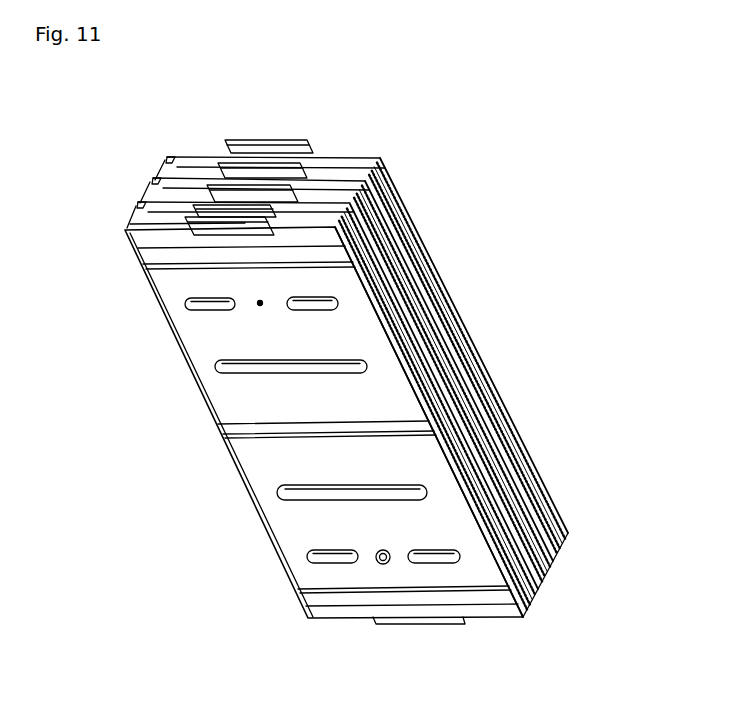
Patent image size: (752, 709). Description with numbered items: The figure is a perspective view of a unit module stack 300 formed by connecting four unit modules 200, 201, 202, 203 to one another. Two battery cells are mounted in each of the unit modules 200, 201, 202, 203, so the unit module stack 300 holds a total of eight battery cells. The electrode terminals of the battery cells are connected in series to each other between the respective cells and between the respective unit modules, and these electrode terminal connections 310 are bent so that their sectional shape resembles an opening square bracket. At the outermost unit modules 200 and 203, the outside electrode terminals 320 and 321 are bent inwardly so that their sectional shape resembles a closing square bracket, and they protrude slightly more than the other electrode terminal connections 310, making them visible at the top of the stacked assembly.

The unit module stack 300 is at (76, 65).
The unit module 200 is at (262, 478).
The unit module 201 is at (530, 583).
The unit module 202 is at (553, 550).
The unit module 203 is at (570, 530).
The electrode terminal connection 310 is at (227, 188).
The outside electrode terminal 320 is at (203, 225).
The outside electrode terminal 321 is at (296, 139).